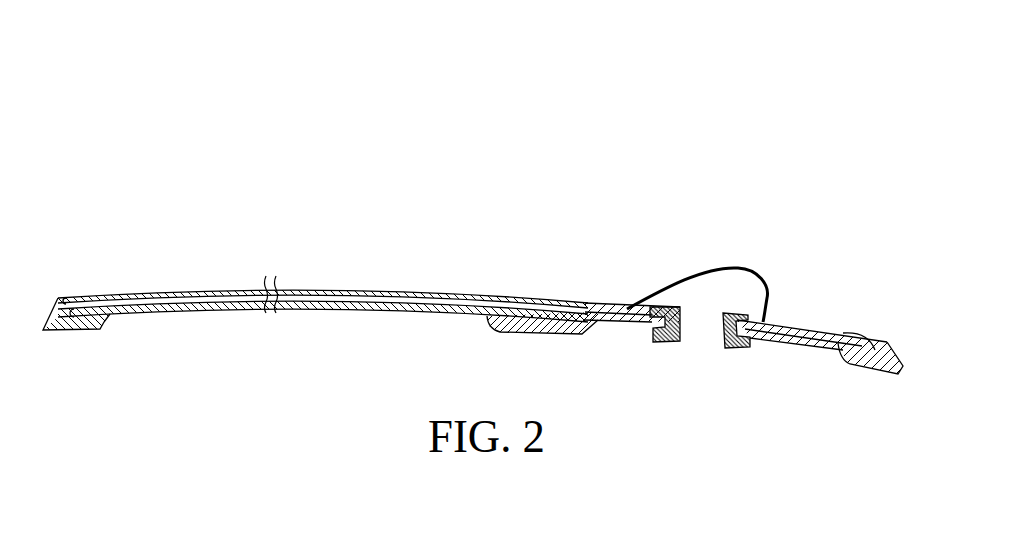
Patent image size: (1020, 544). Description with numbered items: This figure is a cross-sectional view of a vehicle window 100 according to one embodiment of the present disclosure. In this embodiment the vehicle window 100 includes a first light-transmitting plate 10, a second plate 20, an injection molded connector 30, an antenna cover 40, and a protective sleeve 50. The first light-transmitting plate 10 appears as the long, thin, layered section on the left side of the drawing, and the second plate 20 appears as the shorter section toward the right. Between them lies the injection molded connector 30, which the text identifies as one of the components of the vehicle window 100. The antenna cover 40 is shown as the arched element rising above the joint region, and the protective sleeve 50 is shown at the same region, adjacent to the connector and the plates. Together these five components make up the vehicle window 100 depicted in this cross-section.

The vehicle window 100 is at (483, 165).
The first light-transmitting plate 10 is at (317, 290).
The second plate 20 is at (852, 332).
The injection molded connector 30 is at (530, 298).
The antenna cover 40 is at (722, 268).
The protective sleeve 50 is at (662, 305).